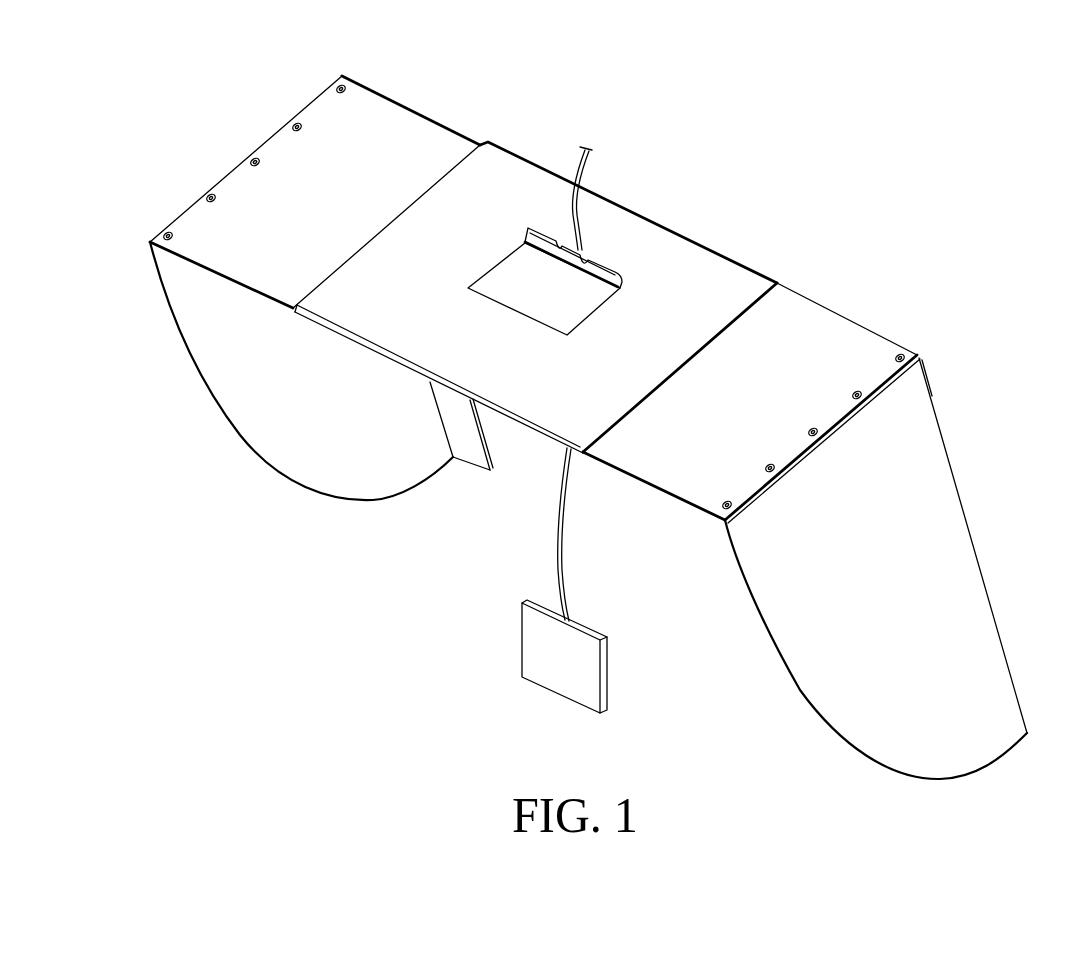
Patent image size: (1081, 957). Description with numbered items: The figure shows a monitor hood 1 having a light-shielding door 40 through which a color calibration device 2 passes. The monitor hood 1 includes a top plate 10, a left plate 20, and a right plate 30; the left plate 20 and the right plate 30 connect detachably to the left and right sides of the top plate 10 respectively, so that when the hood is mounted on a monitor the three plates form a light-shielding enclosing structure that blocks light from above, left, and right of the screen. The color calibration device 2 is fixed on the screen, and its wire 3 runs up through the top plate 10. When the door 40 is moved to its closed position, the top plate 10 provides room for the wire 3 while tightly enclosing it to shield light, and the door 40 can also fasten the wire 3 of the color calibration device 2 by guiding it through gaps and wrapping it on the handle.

The monitor hood 1 is at (968, 120).
The color calibration device 2 is at (540, 648).
The wire 3 is at (580, 155).
The top plate 10 is at (657, 240).
The left plate 20 is at (413, 130).
The right plate 30 is at (955, 527).
The light-shielding door 40 is at (555, 295).